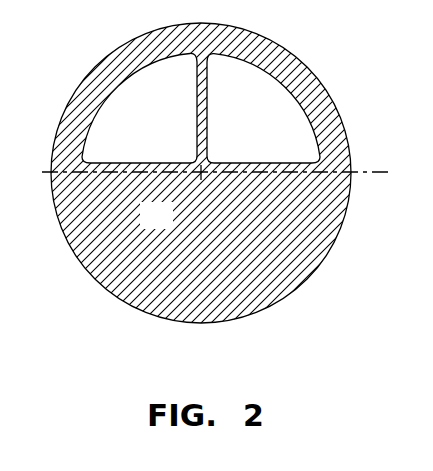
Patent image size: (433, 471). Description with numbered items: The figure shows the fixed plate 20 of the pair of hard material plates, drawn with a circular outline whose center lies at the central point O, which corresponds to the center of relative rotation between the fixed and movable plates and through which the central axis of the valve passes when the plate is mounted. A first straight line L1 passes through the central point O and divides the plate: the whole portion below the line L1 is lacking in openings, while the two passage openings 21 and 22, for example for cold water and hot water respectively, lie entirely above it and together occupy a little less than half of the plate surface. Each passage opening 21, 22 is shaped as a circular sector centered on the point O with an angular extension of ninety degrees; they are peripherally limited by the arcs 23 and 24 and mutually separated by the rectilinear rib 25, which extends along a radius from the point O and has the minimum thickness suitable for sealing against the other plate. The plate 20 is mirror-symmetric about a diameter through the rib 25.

The fixed plate 20 is at (293, 237).
The passage opening 21 is at (158, 131).
The passage opening 22 is at (262, 118).
The peripheral arc 23 is at (131, 57).
The peripheral arc 24 is at (290, 62).
The rib 25 is at (200, 130).
The first straight line L1 is at (383, 172).
The central point O is at (203, 177).